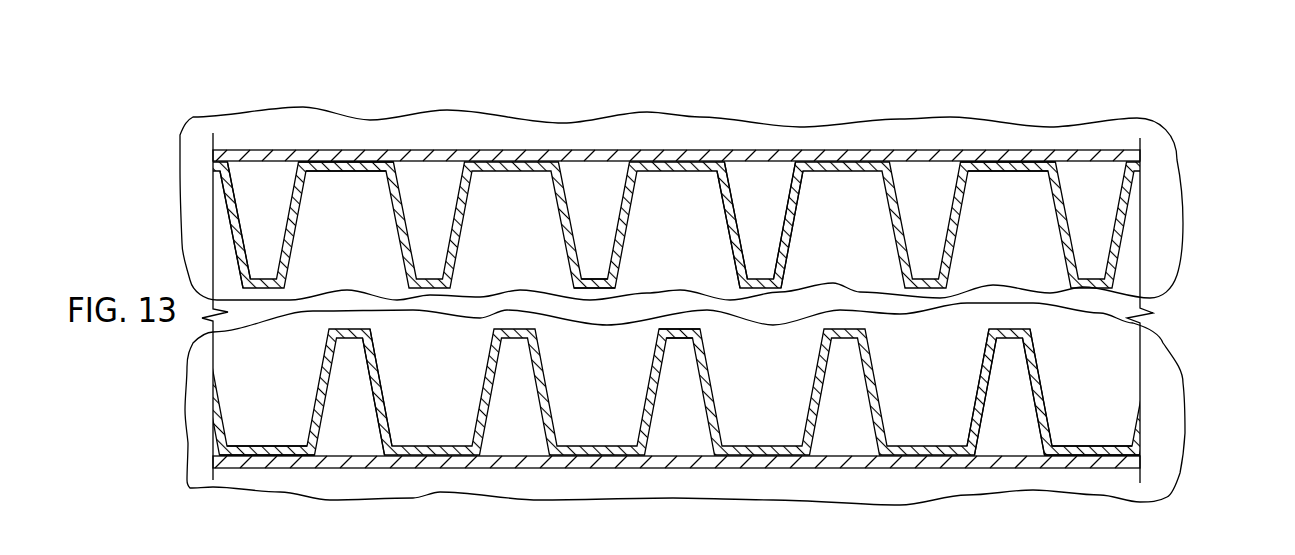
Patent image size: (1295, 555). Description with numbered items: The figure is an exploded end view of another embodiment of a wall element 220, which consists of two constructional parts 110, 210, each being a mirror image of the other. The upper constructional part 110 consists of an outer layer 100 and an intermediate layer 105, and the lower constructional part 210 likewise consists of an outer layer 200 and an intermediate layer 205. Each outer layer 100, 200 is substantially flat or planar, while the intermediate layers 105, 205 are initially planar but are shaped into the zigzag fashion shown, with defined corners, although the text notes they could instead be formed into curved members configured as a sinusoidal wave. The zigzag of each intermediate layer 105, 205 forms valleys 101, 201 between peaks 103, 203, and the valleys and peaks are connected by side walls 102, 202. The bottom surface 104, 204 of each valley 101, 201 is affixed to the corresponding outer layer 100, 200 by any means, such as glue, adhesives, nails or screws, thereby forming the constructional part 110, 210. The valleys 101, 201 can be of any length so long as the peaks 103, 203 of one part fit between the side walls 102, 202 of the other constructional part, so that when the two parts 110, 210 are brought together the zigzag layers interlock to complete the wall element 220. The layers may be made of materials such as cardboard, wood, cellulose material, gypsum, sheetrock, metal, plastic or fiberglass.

The outer layer 100 is at (428, 157).
The valley 101 is at (357, 176).
The side wall 102 is at (786, 228).
The peak 103 is at (597, 279).
The bottom surface 104 is at (998, 165).
The intermediate layer 105 is at (240, 248).
The constructional part 110 is at (177, 180).
The outer layer 200 is at (502, 460).
The valley 201 is at (247, 444).
The side wall 202 is at (1037, 400).
The peak 203 is at (678, 340).
The bottom surface 204 is at (1106, 455).
The intermediate layer 205 is at (373, 381).
The constructional part 210 is at (188, 446).
The wall element 220 is at (1240, 127).